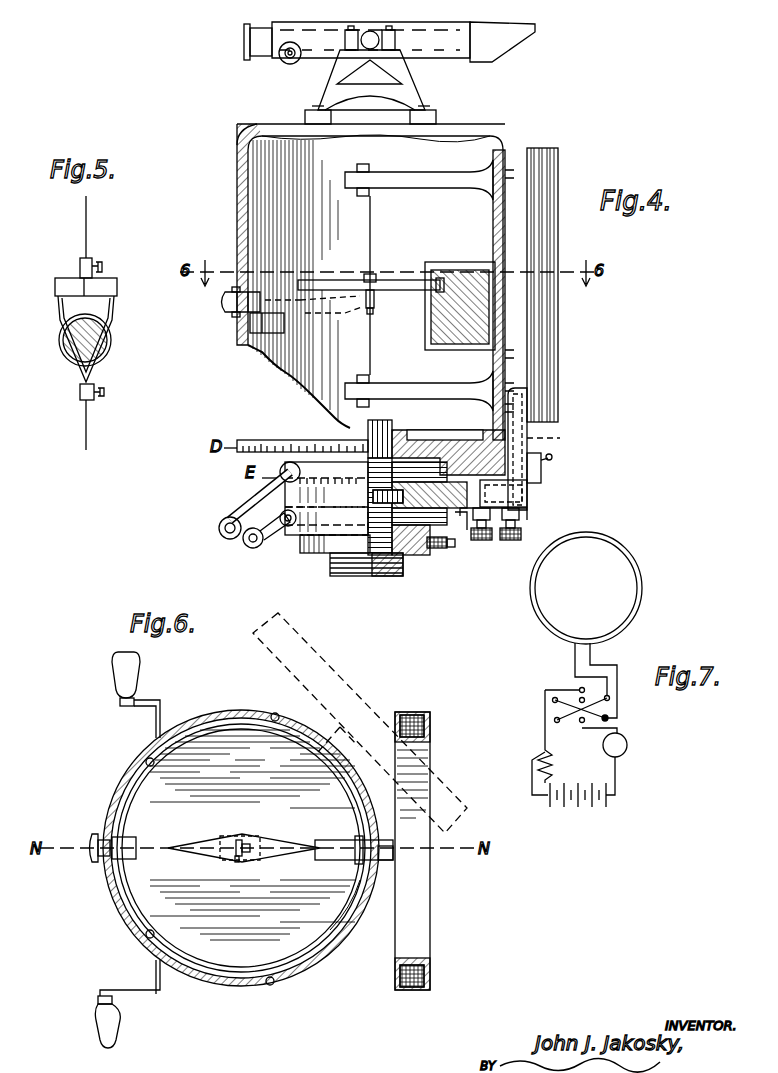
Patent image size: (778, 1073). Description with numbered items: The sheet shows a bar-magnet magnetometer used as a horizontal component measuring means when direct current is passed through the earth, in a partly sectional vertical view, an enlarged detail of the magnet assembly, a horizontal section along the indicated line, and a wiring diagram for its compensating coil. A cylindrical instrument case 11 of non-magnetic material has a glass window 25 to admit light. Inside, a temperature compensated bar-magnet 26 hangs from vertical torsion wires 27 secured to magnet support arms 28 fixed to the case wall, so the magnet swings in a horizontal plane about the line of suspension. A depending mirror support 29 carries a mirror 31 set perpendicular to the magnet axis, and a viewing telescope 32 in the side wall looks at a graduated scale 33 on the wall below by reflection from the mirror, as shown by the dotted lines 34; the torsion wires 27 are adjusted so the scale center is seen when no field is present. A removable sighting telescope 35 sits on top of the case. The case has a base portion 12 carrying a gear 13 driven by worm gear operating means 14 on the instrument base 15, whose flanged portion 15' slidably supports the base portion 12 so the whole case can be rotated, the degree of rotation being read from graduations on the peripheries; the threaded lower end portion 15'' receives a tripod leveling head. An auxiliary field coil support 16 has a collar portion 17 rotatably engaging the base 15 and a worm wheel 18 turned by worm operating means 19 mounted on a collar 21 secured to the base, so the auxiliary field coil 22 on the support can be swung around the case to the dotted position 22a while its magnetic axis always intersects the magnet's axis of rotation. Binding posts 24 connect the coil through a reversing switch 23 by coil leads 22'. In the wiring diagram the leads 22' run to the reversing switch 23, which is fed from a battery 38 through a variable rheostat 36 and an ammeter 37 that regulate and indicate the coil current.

In FIG. 4, the instrument case 11 is at (375, 282).
In FIG. 6, the instrument case 11 is at (130, 908).
In FIG. 4, the base portion 12 is at (445, 430).
In FIG. 4, the gear 13 is at (447, 475).
In FIG. 4, the worm gear operating means 14 is at (255, 502).
In FIG. 6, the worm gear operating means 14 is at (156, 975).
In FIG. 4, the instrument base 15 is at (417, 502).
In FIG. 4, the flanged portion 15' is at (504, 449).
In FIG. 4, the threaded lower end portion 15'' is at (362, 581).
In FIG. 4, the auxiliary field coil support 16 is at (527, 493).
In FIG. 6, the auxiliary field coil support 16 is at (390, 860).
In FIG. 4, the collar portion 17 is at (467, 530).
In FIG. 4, the worm wheel 18 is at (368, 518).
In FIG. 4, the worm operating means 19 is at (262, 546).
In FIG. 6, the worm operating means 19 is at (160, 716).
In FIG. 4, the collar 21 is at (350, 548).
In FIG. 4, the auxiliary field coil 22 is at (542, 270).
In FIG. 6, the auxiliary field coil 22 is at (415, 837).
In FIG. 7, the auxiliary field coil 22 is at (586, 593).
In FIG. 4, the coil leads 22' is at (554, 438).
In FIG. 7, the coil leads 22' is at (609, 686).
In FIG. 6, the rotated coil position 22a is at (364, 712).
In FIG. 4, the reversing switch 23 is at (541, 470).
In FIG. 7, the reversing switch 23 is at (570, 718).
In FIG. 4, the binding posts 24 is at (490, 540).
In FIG. 7, the binding posts 24 is at (578, 688).
In FIG. 4, the glass window 25 is at (455, 282).
In FIG. 6, the glass window 25 is at (350, 915).
In FIG. 4, the bar-magnet 26 is at (395, 290).
In FIG. 5, the bar-magnet 26 is at (86, 277).
In FIG. 6, the bar-magnet 26 is at (200, 841).
In FIG. 4, the torsion wires 27 is at (370, 355).
In FIG. 5, the torsion wires 27 is at (86, 233).
In FIG. 6, the torsion wires 27 is at (240, 840).
In FIG. 4, the magnet support arms 28 is at (420, 175).
In FIG. 6, the magnet support arms 28 is at (348, 840).
In FIG. 4, the mirror support 29 is at (362, 295).
In FIG. 5, the mirror support 29 is at (114, 312).
In FIG. 4, the mirror 31 is at (365, 314).
In FIG. 5, the mirror 31 is at (78, 350).
In FIG. 6, the mirror 31 is at (237, 862).
In FIG. 4, the viewing telescope 32 is at (228, 312).
In FIG. 6, the viewing telescope 32 is at (100, 834).
In FIG. 4, the graduated scale 33 is at (262, 333).
In FIG. 6, the graduated scale 33 is at (126, 810).
In FIG. 4, the dotted lines 34 is at (310, 316).
In FIG. 4, the sighting telescope 35 is at (389, 73).
In FIG. 7, the variable rheostat 36 is at (553, 742).
In FIG. 7, the ammeter 37 is at (626, 764).
In FIG. 7, the battery 38 is at (610, 802).